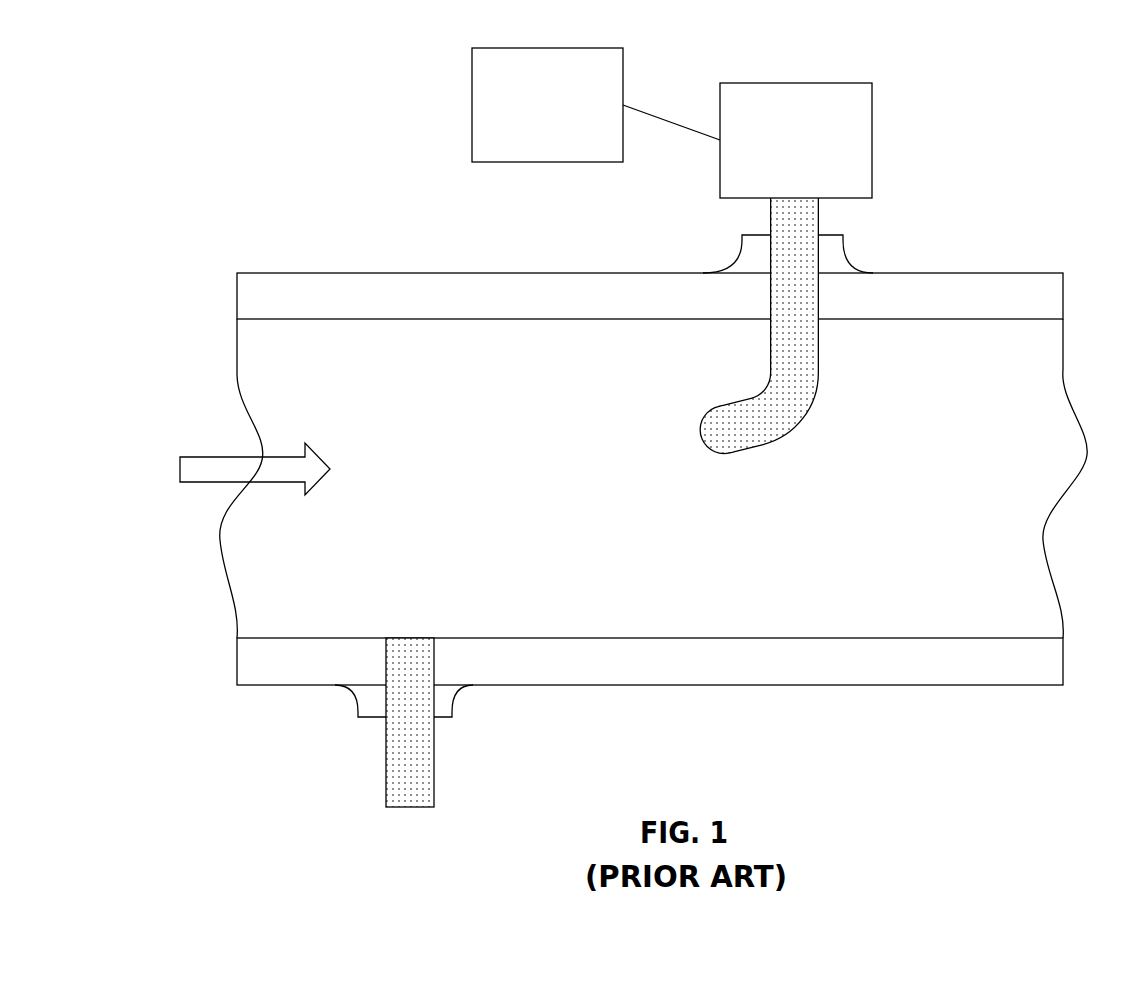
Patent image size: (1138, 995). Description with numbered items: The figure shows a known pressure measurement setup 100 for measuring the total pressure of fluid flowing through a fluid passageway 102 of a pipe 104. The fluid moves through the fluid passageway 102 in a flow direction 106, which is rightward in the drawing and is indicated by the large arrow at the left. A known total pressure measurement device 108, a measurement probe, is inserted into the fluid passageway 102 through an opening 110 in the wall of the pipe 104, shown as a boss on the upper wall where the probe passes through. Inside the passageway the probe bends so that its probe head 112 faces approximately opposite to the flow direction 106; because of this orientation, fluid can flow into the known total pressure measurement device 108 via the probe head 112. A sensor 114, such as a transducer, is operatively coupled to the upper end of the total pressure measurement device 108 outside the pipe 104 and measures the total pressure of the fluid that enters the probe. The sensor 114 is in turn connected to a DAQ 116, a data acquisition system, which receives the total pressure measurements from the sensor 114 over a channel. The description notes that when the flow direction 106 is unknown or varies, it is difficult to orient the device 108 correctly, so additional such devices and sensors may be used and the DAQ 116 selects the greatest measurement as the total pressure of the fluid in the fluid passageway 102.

The pressure measurement setup 100 is at (602, 407).
The fluid passageway 102 is at (497, 483).
The pipe 104 is at (388, 272).
The flow direction 106 is at (200, 455).
The total pressure measurement device 108 is at (793, 422).
The opening 110 is at (760, 233).
The probe head 112 is at (700, 432).
The sensor 114 is at (798, 82).
The DAQ 116 is at (547, 47).